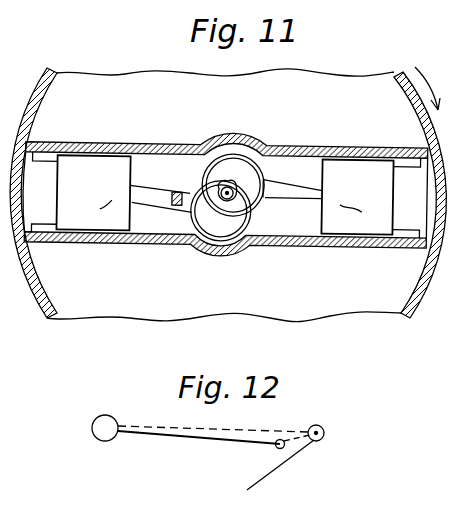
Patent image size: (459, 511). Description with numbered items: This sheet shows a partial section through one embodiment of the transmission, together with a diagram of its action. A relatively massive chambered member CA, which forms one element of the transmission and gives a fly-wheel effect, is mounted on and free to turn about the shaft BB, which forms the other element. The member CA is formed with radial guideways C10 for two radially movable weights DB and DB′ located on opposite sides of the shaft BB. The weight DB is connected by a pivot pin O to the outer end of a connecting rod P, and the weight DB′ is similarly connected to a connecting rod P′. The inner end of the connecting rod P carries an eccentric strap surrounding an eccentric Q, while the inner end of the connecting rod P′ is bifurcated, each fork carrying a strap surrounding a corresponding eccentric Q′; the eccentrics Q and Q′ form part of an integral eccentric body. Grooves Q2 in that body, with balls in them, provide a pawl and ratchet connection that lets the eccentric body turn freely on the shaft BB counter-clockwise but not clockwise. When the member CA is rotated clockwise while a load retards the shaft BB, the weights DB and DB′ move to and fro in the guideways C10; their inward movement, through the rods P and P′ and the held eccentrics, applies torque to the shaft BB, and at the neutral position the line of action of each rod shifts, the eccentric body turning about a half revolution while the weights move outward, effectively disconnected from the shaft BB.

In FIG. 11, the chambered member CA is at (365, 78).
In FIG. 11, the radial guideways C10 is at (152, 156).
In FIG. 11, the weight DB′ is at (72, 165).
In FIG. 11, the weight DB is at (365, 161).
In FIG. 12, the weight DB is at (108, 442).
In FIG. 11, the pivot pin O is at (231, 213).
In FIG. 11, the connecting rod P′ is at (148, 200).
In FIG. 11, the connecting rod P is at (302, 193).
In FIG. 12, the connecting rod P is at (246, 430).
In FIG. 11, the eccentric Q is at (233, 165).
In FIG. 12, the eccentric Q is at (278, 460).
In FIG. 11, the eccentric Q′ is at (205, 217).
In FIG. 11, the grooves Q2 is at (222, 189).
In FIG. 11, the shaft BB is at (226, 196).
In FIG. 12, the shaft BB is at (325, 431).